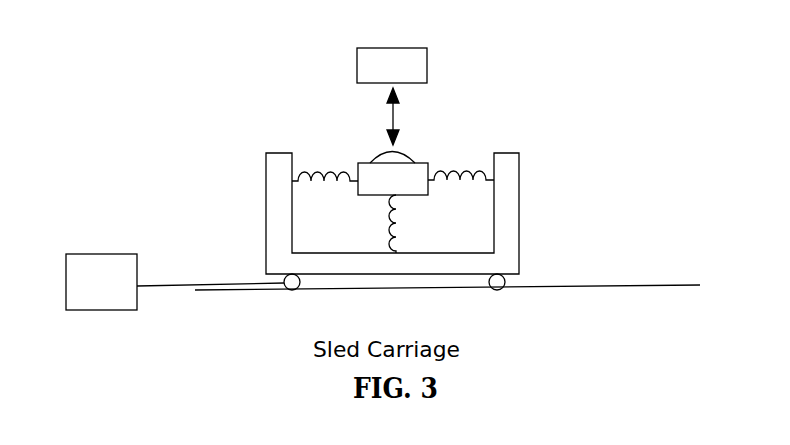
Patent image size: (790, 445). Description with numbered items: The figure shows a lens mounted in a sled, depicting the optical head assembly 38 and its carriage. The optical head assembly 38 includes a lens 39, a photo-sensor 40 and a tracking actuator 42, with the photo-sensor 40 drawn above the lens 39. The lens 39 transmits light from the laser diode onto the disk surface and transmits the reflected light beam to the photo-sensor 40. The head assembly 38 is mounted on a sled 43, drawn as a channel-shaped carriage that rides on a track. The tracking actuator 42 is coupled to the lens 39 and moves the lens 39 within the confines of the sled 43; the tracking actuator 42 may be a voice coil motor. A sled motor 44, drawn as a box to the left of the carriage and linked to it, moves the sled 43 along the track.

The optical head assembly 38 is at (523, 88).
The lens 39 is at (414, 163).
The photo-sensor 40 is at (424, 47).
The tracking actuator 42 is at (358, 164).
The sled 43 is at (520, 258).
The sled motor 44 is at (82, 254).